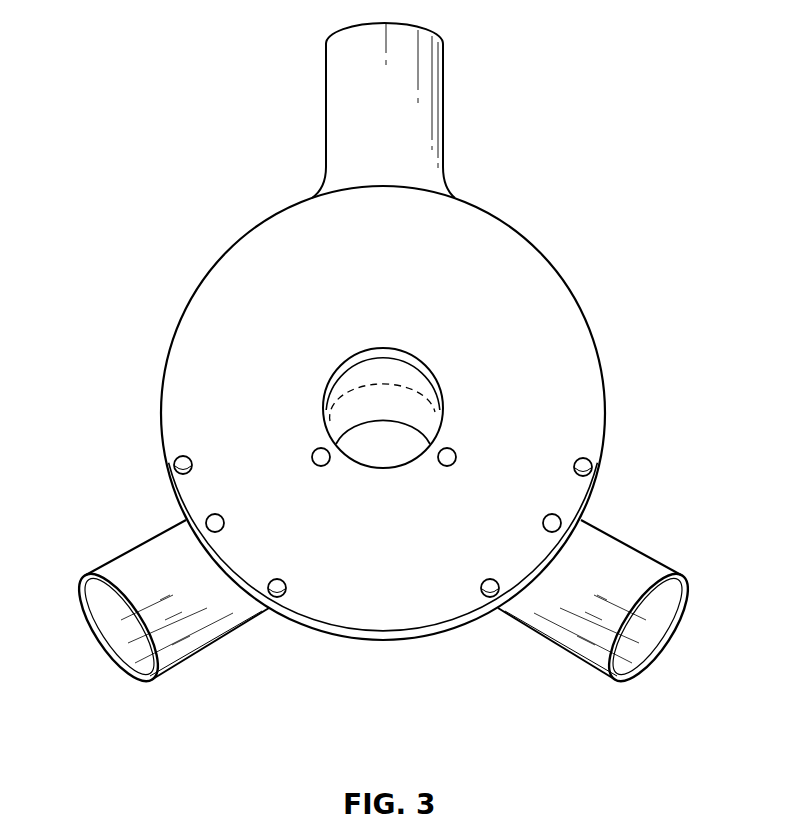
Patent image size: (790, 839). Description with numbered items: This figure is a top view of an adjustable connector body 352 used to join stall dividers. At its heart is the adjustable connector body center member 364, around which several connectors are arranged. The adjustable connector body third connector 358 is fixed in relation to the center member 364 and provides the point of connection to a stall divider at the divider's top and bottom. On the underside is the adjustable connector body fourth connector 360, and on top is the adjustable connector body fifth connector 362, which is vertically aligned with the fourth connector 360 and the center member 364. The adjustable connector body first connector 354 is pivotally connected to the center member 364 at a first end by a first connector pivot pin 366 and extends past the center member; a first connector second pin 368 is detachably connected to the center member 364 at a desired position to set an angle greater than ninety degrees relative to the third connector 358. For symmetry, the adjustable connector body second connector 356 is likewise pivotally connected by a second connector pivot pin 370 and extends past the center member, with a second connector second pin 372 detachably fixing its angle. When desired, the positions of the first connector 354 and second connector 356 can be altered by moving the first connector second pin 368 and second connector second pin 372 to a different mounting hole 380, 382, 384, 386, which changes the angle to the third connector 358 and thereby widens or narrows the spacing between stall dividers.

The adjustable connector body 352 is at (604, 77).
The adjustable connector body first connector 354 is at (662, 640).
The adjustable connector body second connector 356 is at (108, 631).
The adjustable connector body third connector 358 is at (427, 59).
The adjustable connector body fourth connector 360 is at (428, 420).
The adjustable connector body fifth connector 362 is at (382, 352).
The adjustable connector body center member 364 is at (583, 361).
The first connector pivot pin 366 is at (446, 467).
The first connector second pin 368 is at (552, 513).
The second connector pivot pin 370 is at (316, 451).
The second connector second pin 372 is at (221, 519).
The mounting hole 380 is at (176, 472).
The mounting hole 382 is at (276, 595).
The mounting hole 384 is at (491, 595).
The mounting hole 386 is at (586, 467).